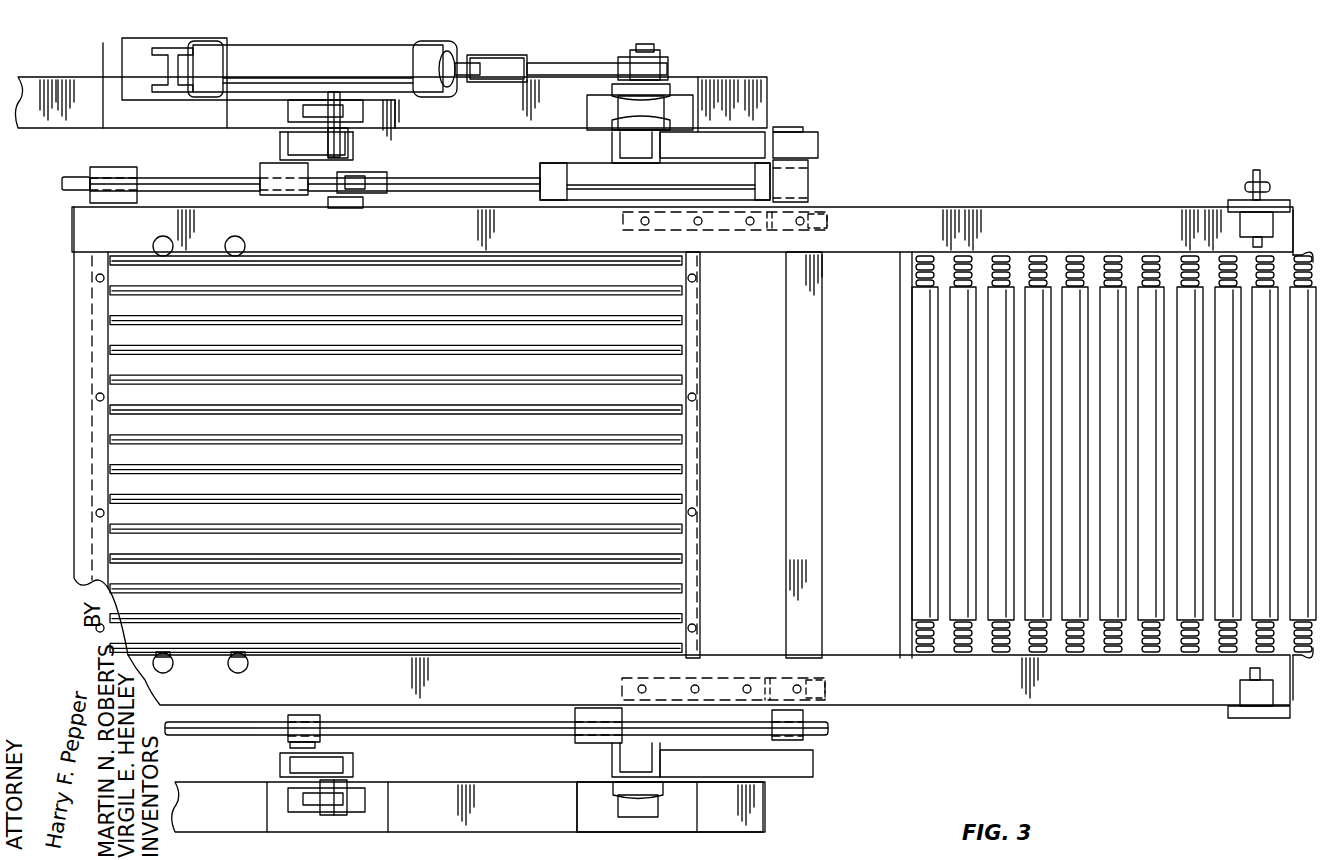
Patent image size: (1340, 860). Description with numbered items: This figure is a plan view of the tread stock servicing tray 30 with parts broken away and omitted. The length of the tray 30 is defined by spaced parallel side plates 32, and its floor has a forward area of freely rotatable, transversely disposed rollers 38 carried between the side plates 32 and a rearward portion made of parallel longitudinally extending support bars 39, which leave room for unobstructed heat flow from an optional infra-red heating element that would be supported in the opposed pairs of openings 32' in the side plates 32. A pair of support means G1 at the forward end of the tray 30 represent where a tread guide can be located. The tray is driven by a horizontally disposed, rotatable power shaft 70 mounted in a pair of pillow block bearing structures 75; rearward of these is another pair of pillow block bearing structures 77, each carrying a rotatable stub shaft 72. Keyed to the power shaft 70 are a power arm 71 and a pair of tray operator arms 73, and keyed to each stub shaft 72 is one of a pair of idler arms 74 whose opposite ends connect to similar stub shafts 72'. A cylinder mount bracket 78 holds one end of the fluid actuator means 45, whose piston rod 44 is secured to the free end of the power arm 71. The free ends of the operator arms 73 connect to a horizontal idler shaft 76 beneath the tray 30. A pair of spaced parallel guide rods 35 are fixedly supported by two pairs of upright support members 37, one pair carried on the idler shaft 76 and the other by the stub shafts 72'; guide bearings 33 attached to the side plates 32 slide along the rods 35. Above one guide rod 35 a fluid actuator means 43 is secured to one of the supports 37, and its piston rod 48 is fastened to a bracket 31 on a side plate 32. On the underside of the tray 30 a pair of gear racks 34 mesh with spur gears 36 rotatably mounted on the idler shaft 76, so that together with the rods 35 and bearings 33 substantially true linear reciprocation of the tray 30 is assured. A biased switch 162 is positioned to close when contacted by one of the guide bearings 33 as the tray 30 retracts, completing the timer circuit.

The tread tray 30 is at (992, 686).
The bracket 31 is at (352, 200).
The side plates 32 is at (682, 462).
The openings 32' is at (204, 454).
The guide bearings 33 is at (112, 168).
The gear racks 34 is at (622, 224).
The guide rods 35 is at (158, 180).
The spur gears 36 is at (822, 232).
The upright support members 37 is at (796, 183).
The rollers 38 is at (1160, 626).
The support bars 39 is at (140, 466).
The fluid actuator means 43 is at (593, 180).
The piston rod 44 is at (458, 80).
The fluid actuator means 45 is at (298, 60).
The piston rod 48 is at (495, 181).
The power shaft 70 is at (645, 53).
The power arm 71 is at (550, 68).
The stub shaft 72 is at (301, 479).
The stub shafts 72' is at (272, 756).
The tray operator arms 73 is at (735, 146).
The idler arms 74 is at (345, 165).
The pillow block bearing structures 75 is at (655, 108).
The idler shaft 76 is at (806, 133).
The pillow block bearing structures 77 is at (345, 110).
The cylinder mount bracket 78 is at (138, 62).
The biased switch 162 is at (282, 182).
The support means G1 is at (1186, 746).